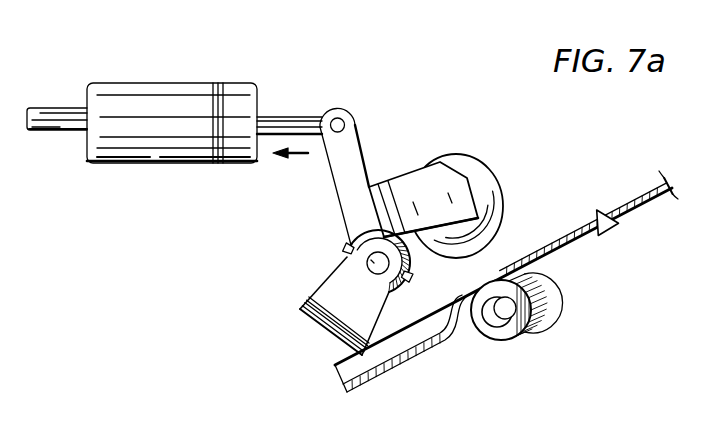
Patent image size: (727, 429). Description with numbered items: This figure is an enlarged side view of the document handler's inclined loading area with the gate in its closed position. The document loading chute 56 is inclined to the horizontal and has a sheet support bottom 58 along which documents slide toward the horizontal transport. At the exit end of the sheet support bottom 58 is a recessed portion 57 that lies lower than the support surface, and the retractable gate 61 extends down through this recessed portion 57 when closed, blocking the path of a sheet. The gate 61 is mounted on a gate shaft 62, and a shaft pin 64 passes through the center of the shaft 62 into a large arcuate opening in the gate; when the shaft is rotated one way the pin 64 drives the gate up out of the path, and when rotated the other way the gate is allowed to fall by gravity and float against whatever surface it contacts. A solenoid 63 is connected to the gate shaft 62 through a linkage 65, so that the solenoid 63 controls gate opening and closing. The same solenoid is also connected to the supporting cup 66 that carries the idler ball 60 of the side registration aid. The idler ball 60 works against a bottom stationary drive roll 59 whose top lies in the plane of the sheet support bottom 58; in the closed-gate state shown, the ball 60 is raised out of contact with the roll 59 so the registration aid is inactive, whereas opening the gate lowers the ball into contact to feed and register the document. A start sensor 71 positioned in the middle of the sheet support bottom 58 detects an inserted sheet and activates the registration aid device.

The document loading chute 56 is at (647, 201).
The recessed portion 57 is at (402, 362).
The sheet support bottom 58 is at (581, 243).
The bottom stationary drive roll 59 is at (530, 326).
The idler ball 60 is at (477, 173).
The retractable gate 61 is at (305, 305).
The gate shaft 62 is at (366, 264).
The solenoid 63 is at (229, 88).
The shaft pin 64 is at (412, 278).
The linkage 65 is at (350, 150).
The supporting cup 66 is at (437, 182).
The start sensor 71 is at (609, 231).